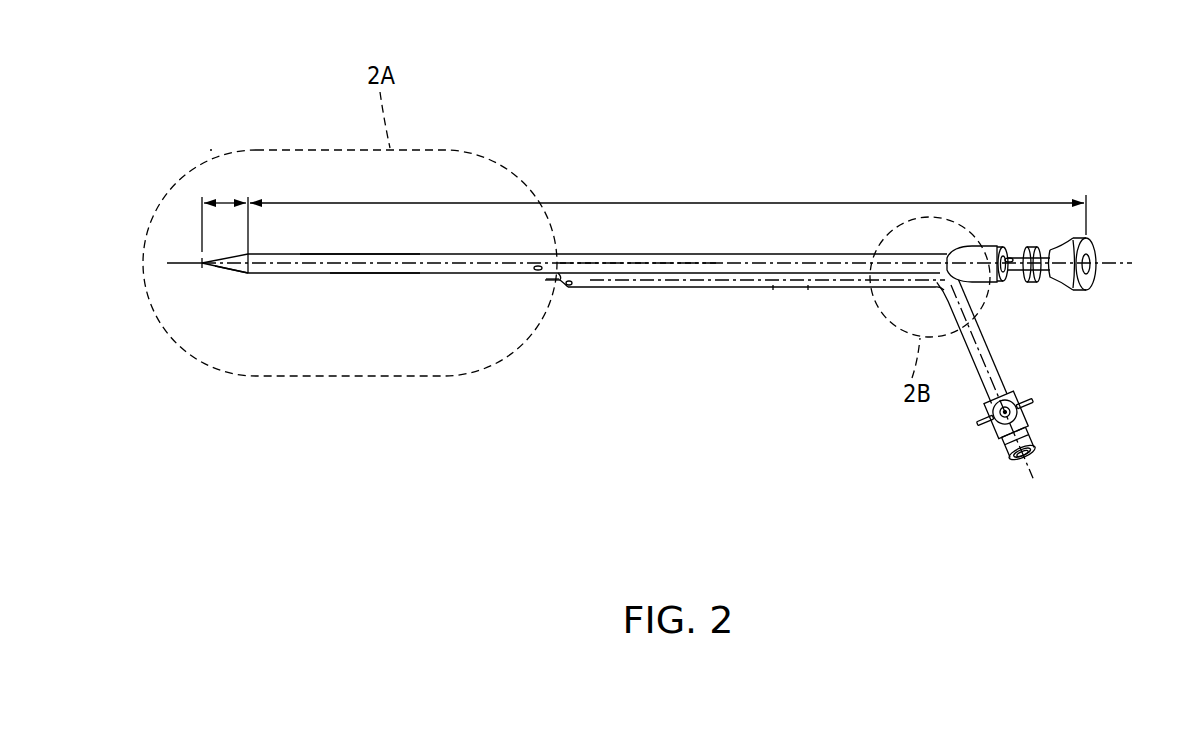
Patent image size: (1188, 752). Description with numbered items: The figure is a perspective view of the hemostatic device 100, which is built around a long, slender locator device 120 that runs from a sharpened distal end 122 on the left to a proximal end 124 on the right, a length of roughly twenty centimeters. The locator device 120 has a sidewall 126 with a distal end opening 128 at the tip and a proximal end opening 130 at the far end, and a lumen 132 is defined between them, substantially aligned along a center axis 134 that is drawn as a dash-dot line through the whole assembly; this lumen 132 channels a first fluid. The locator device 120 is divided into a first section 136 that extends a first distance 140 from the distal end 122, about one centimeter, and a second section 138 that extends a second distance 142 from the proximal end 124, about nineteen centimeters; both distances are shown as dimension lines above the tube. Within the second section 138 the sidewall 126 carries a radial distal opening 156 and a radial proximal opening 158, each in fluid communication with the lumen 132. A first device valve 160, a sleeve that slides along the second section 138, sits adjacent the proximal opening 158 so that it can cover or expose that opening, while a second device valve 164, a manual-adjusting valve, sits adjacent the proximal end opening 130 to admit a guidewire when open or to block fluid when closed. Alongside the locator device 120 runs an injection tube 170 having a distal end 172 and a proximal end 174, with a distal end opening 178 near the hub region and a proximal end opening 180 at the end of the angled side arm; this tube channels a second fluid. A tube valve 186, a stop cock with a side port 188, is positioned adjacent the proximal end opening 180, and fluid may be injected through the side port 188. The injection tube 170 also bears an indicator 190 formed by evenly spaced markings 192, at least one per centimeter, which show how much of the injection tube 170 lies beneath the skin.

The hemostatic device 100 is at (817, 451).
The locator device 120 is at (737, 242).
The distal end 122 is at (202, 277).
The proximal end 124 is at (1104, 251).
The sidewall 126 is at (338, 255).
The distal end opening 128 is at (201, 262).
The proximal end opening 130 is at (1096, 244).
The lumen 132 is at (643, 258).
The center axis 134 is at (1117, 268).
The first section 136 is at (231, 277).
The second section 138 is at (377, 279).
The first distance 140 is at (226, 202).
The second distance 142 is at (600, 203).
The distal opening 156 is at (536, 271).
The proximal opening 158 is at (1010, 266).
The first device valve 160 is at (941, 279).
The second device valve 164 is at (1070, 283).
The injection tube 170 is at (929, 309).
The distal end 172 is at (554, 289).
The proximal end 174 is at (1033, 459).
The distal end opening 178 is at (568, 287).
The proximal end opening 180 is at (1013, 460).
The tube valve 186 is at (1023, 403).
The side port 188 is at (1003, 438).
The indicator 190 is at (730, 298).
The markings 192 is at (773, 290).